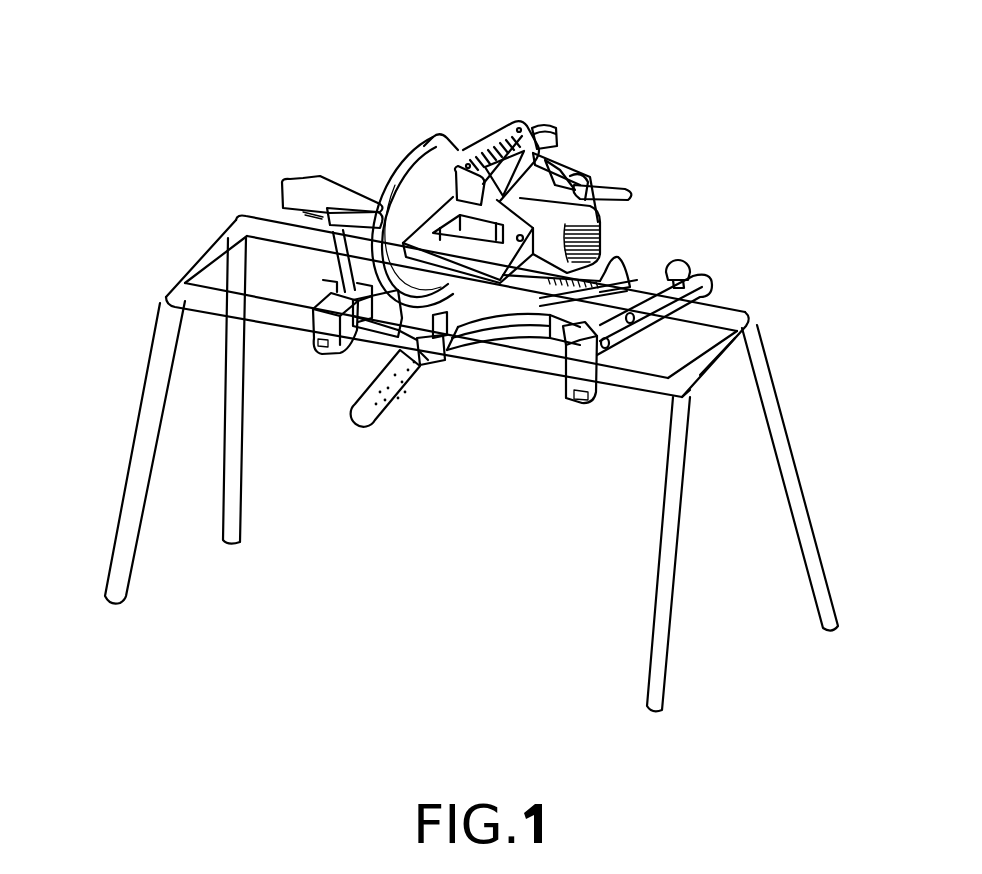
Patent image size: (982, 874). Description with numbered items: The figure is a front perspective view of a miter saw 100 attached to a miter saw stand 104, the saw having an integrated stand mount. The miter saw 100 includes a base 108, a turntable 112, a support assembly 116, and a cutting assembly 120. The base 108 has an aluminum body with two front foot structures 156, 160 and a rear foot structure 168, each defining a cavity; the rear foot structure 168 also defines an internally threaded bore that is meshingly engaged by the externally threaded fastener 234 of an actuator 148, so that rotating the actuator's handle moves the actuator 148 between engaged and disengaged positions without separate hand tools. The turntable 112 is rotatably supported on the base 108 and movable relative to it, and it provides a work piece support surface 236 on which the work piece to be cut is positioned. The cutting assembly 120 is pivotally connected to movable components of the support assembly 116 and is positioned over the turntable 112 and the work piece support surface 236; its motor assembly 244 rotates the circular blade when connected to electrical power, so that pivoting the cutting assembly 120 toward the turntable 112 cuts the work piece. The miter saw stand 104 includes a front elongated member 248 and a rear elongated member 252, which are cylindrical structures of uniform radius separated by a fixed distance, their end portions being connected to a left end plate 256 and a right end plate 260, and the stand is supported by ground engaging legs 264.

The miter saw 100 is at (545, 82).
The miter saw stand 104 is at (180, 200).
The base 108 is at (694, 357).
The turntable 112 is at (503, 298).
The support assembly 116 is at (588, 182).
The cutting assembly 120 is at (460, 145).
The actuator 148 is at (678, 250).
The front foot structure 156 is at (313, 360).
The front foot structure 160 is at (590, 387).
The rear foot structure 168 is at (703, 287).
The externally threaded fastener 234 is at (706, 282).
The work piece support surface 236 is at (525, 298).
The motor assembly 244 is at (572, 228).
The front elongated member 248 is at (273, 308).
The rear elongated member 252 is at (267, 228).
The left end plate 256 is at (188, 260).
The right end plate 260 is at (737, 360).
The ground engaging legs 264 is at (130, 478).